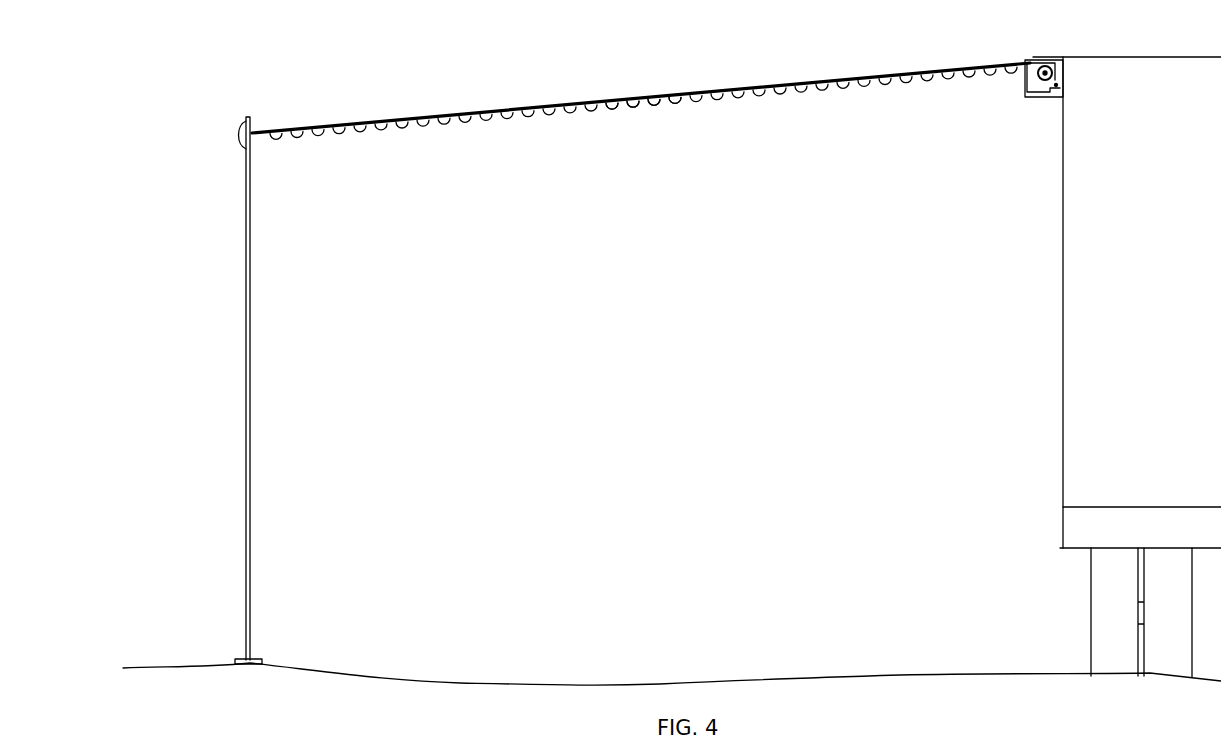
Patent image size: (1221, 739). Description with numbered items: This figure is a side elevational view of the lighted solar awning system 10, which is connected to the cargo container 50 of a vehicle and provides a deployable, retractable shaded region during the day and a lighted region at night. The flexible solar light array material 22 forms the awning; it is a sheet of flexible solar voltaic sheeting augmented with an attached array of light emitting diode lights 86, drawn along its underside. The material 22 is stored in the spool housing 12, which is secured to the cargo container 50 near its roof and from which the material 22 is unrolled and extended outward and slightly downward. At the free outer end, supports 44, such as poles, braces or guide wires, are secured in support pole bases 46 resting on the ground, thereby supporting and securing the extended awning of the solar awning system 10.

The lighted solar awning system 10 is at (182, 88).
The spool housing 12 is at (1023, 78).
The flexible solar light array material 22 is at (418, 113).
The supports 44 is at (250, 472).
The support pole bases 46 is at (257, 658).
The cargo container 50 is at (1102, 350).
The light emitting diode lights 86 is at (665, 101).